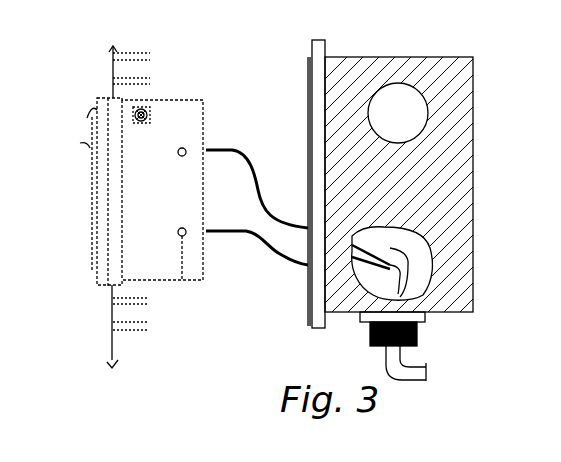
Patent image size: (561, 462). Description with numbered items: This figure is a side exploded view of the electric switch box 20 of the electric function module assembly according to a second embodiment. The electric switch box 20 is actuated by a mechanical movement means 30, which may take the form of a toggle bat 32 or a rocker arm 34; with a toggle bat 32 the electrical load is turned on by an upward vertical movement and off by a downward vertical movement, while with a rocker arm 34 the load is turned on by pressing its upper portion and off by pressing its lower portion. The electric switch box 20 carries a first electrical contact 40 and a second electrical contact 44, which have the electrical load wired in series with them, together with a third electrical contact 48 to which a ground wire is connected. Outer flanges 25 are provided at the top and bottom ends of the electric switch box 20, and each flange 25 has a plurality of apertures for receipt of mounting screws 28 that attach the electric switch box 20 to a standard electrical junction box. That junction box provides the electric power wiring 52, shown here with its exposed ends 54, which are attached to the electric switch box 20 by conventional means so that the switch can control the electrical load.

The electric switch box 20 is at (151, 100).
The outer flanges 25 is at (113, 50).
The mounting screws 28 is at (112, 75).
The mechanical movement means 30 is at (88, 127).
The toggle bat 32 is at (400, 231).
The rocker arm 34 is at (84, 142).
The first electrical contact 40 is at (186, 146).
The second electrical contact 44 is at (182, 282).
The third electrical contact 48 is at (150, 115).
The electric power wiring 52 is at (420, 232).
The exposed ends 54 is at (213, 147).